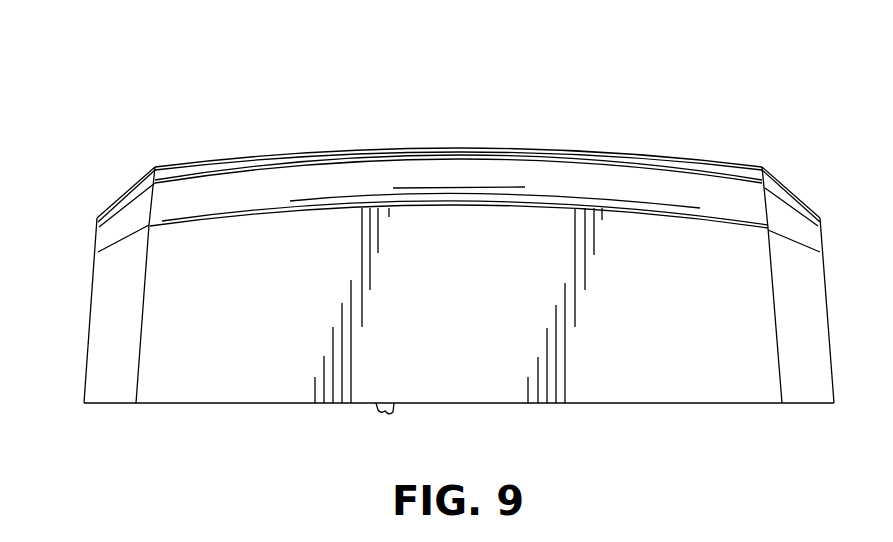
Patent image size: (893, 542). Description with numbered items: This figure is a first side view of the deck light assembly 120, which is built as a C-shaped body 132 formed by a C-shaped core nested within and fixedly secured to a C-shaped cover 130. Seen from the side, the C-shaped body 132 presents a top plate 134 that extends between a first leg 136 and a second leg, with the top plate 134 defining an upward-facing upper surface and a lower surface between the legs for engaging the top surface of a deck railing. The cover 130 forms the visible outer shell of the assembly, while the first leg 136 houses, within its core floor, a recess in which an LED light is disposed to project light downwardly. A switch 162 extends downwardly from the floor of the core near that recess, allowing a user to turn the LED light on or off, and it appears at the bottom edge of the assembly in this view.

The deck light assembly 120 is at (367, 84).
The C-shaped cover 130 is at (733, 173).
The C-shaped body 132 is at (153, 163).
The top plate 134 is at (278, 156).
The first leg 136 is at (153, 321).
The switch 162 is at (375, 411).